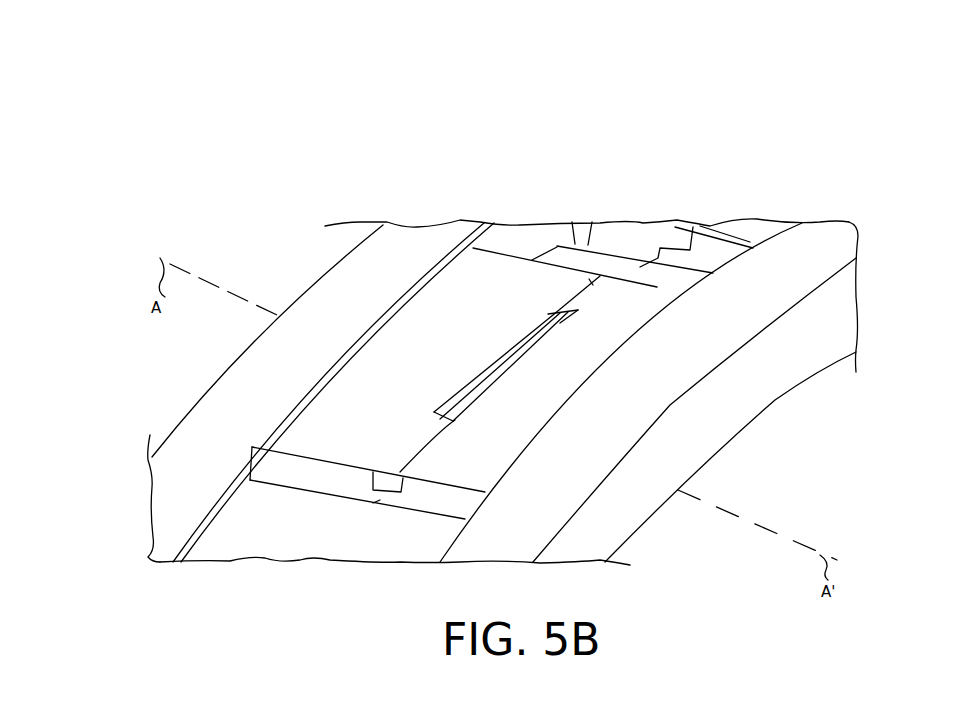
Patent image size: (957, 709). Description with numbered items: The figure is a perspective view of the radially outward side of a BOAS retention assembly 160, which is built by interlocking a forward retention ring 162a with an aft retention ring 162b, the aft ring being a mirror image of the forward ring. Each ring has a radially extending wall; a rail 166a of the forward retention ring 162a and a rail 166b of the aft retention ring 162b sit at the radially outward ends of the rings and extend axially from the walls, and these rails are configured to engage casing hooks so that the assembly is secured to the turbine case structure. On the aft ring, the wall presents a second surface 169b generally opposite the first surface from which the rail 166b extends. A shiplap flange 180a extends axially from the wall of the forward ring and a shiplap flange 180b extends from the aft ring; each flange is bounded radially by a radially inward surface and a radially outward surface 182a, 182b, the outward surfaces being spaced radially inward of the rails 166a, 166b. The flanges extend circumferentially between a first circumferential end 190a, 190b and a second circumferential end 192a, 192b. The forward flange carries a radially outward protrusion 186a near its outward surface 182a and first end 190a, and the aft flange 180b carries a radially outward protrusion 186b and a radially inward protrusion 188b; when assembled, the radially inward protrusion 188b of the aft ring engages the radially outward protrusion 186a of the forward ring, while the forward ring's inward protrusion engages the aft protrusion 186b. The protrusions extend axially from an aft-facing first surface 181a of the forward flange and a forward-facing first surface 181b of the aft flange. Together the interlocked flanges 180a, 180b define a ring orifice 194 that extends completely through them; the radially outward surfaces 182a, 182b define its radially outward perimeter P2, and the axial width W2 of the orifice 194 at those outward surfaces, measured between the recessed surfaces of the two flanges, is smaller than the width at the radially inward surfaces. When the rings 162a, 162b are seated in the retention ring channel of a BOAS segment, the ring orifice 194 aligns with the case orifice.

The BOAS retention assembly 160 is at (244, 188).
The forward retention ring 162a is at (145, 435).
The aft retention ring 162b is at (827, 212).
The rail 166a is at (269, 341).
The rail 166b is at (696, 289).
The second surface 169b is at (730, 457).
The shiplap flange 180a is at (372, 372).
The shiplap flange 180b is at (483, 467).
The first surface 181a is at (546, 320).
The first surface 181b is at (562, 325).
The radially outward surface 182a is at (535, 294).
The radially outward surface 182b is at (481, 424).
The radially outward protrusion 186a is at (377, 485).
The radially outward protrusion 186b is at (590, 283).
The radially inward protrusion 188b is at (380, 502).
The first circumferential end 190a is at (336, 479).
The first circumferential end 190b is at (657, 285).
The second circumferential end 192a is at (546, 258).
The second circumferential end 192b is at (437, 491).
The ring orifice 194 is at (513, 364).
The axial width W2 is at (516, 424).
The radially outward perimeter P2 is at (578, 310).